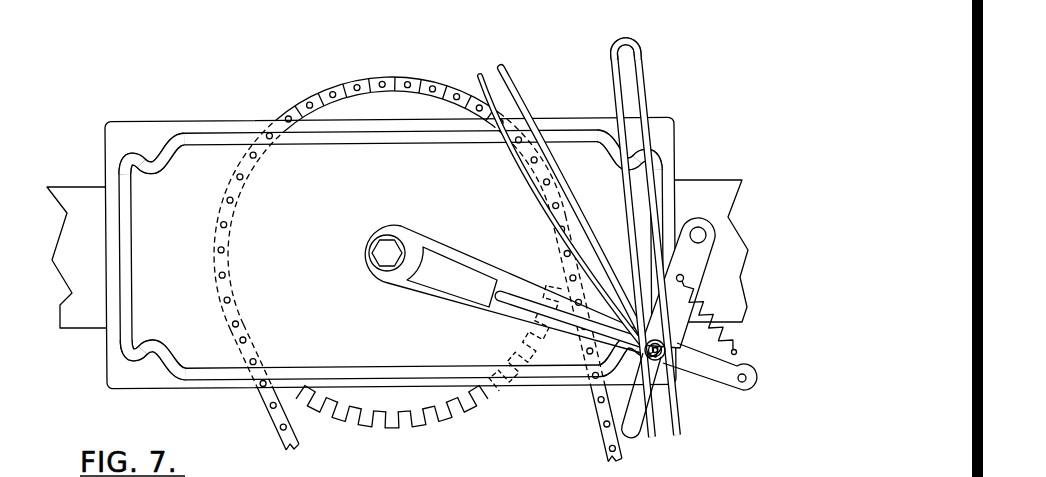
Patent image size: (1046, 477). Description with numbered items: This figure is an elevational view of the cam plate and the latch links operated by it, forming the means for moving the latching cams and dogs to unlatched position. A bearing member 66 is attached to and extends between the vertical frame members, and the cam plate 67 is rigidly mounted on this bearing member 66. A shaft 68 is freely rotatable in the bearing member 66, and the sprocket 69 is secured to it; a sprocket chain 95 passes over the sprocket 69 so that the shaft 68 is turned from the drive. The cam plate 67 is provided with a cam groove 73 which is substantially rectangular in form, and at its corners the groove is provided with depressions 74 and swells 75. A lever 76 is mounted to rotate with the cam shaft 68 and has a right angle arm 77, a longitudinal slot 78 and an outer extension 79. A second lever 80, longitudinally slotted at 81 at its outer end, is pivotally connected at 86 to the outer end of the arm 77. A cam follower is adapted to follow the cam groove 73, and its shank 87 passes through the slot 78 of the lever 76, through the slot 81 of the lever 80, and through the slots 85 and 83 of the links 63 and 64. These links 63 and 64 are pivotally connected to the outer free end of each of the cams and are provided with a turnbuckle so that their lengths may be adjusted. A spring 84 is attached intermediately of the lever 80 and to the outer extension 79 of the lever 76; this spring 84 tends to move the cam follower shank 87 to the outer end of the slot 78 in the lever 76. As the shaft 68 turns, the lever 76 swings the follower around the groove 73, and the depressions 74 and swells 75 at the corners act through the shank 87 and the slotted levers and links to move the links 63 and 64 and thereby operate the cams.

The link 63 is at (637, 71).
The link 64 is at (506, 81).
The bearing member 66 is at (75, 195).
The cam plate 67 is at (161, 133).
The shaft 68 is at (383, 253).
The sprocket 69 is at (362, 110).
The cam groove 73 is at (223, 140).
The depressions 74 is at (153, 165).
The swells 75 is at (128, 152).
The lever 76 is at (460, 275).
The right angle arm 77 is at (683, 325).
The longitudinal slot 78 is at (527, 302).
The outer extension 79 is at (717, 372).
The lever 80 is at (693, 262).
The slot 81 is at (628, 424).
The slot 83 is at (570, 190).
The spring 84 is at (705, 346).
The slot 85 is at (627, 50).
The pivotal connection 86 is at (707, 235).
The shank 87 is at (668, 358).
The sprocket chain 95 is at (280, 415).